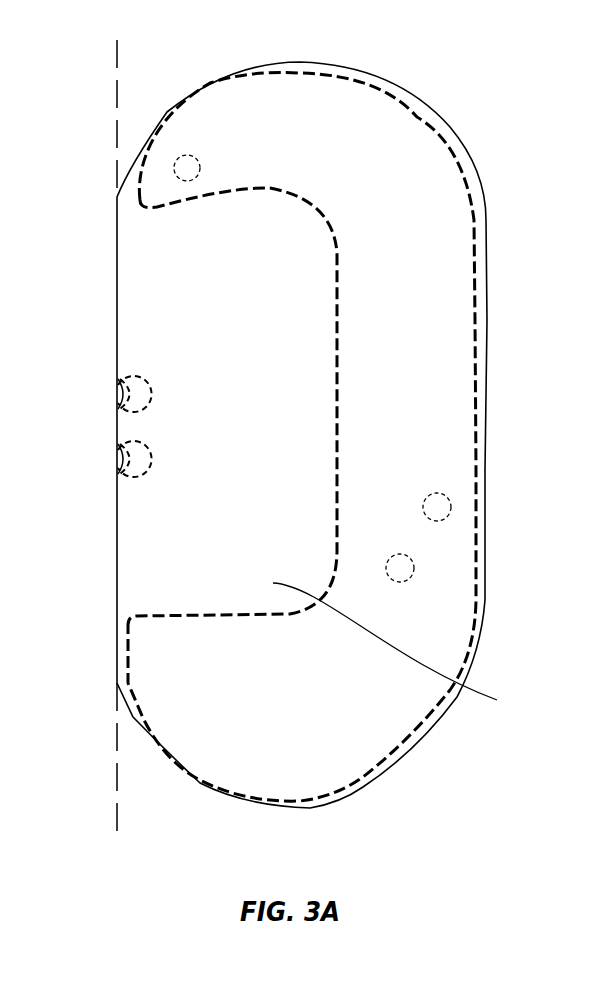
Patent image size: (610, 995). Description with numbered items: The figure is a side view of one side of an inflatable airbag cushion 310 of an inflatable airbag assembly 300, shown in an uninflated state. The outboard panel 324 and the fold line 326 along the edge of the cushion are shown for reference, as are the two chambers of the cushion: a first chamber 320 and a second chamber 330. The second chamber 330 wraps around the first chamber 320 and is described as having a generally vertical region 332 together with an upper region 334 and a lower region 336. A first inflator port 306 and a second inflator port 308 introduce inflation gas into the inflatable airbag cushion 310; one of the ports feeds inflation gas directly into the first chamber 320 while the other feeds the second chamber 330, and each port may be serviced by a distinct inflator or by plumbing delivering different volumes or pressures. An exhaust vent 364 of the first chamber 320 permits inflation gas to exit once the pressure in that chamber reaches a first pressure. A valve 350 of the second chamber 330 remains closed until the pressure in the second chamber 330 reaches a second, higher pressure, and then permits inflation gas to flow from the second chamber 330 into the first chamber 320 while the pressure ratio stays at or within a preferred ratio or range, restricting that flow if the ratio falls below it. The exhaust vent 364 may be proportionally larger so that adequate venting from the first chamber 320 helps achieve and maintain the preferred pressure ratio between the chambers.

The inflatable airbag assembly 300 is at (352, 419).
The first inflator port 306 is at (451, 517).
The second inflator port 308 is at (412, 577).
The inflatable airbag cushion 310 is at (495, 169).
The first chamber 320 is at (261, 494).
The outboard panel 324 is at (401, 647).
The fold line 326 is at (117, 793).
The second chamber 330 is at (355, 127).
The generally vertical region 332 is at (401, 431).
The upper region 334 is at (262, 135).
The lower region 336 is at (270, 725).
The valve 350 is at (176, 158).
The exhaust vent 364 is at (101, 408).